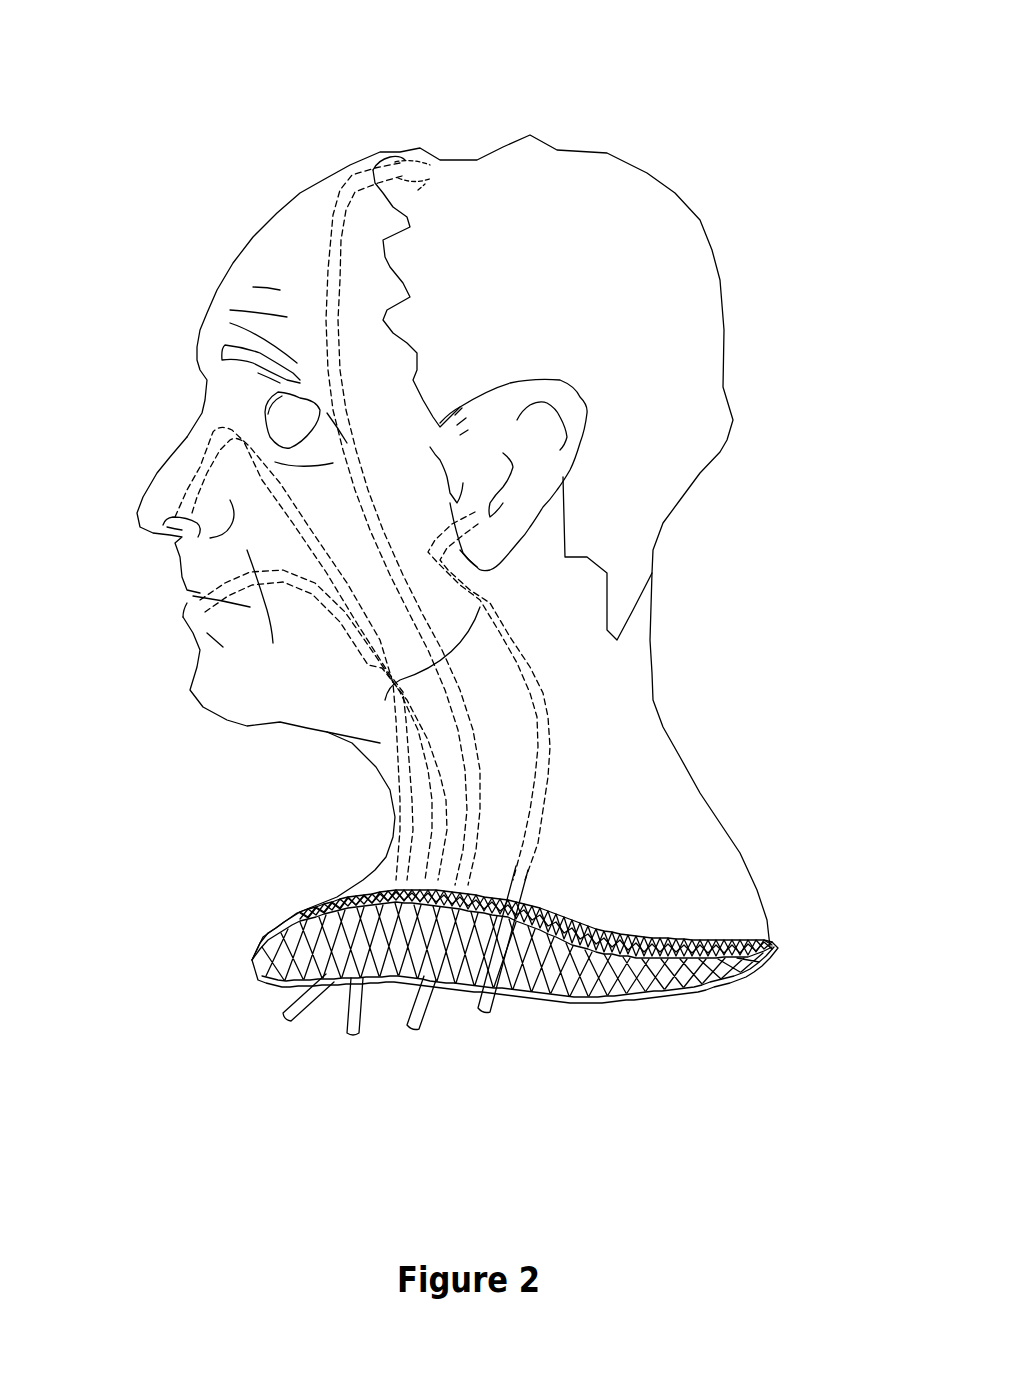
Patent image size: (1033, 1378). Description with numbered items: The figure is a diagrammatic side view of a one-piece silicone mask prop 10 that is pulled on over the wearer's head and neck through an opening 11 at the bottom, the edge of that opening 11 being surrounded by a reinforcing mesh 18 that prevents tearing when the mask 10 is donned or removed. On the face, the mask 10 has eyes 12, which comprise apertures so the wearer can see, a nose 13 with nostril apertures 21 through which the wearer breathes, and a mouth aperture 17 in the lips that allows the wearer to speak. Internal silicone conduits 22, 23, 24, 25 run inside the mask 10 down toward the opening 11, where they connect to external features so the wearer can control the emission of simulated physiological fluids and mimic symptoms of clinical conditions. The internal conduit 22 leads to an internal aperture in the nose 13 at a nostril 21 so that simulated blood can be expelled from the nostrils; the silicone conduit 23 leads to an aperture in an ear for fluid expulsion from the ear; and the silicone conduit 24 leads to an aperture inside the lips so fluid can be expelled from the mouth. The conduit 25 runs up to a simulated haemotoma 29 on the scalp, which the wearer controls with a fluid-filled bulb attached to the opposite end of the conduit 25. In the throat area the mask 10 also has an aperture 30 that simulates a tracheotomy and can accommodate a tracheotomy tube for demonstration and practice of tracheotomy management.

The silicone mask prop 10 is at (210, 120).
The opening 11 is at (603, 1003).
The eyes 12 is at (293, 418).
The nose 13 is at (140, 490).
The mouth aperture 17 is at (197, 596).
The reinforcing mesh 18 is at (775, 942).
The nostril apertures 21 is at (170, 533).
The internal conduit 22 is at (283, 1015).
The silicone conduit 23 is at (487, 1015).
The silicone conduit 24 is at (353, 1040).
The conduit 25 is at (415, 1032).
The simulated haemotoma 29 is at (416, 170).
The aperture 30 is at (387, 852).